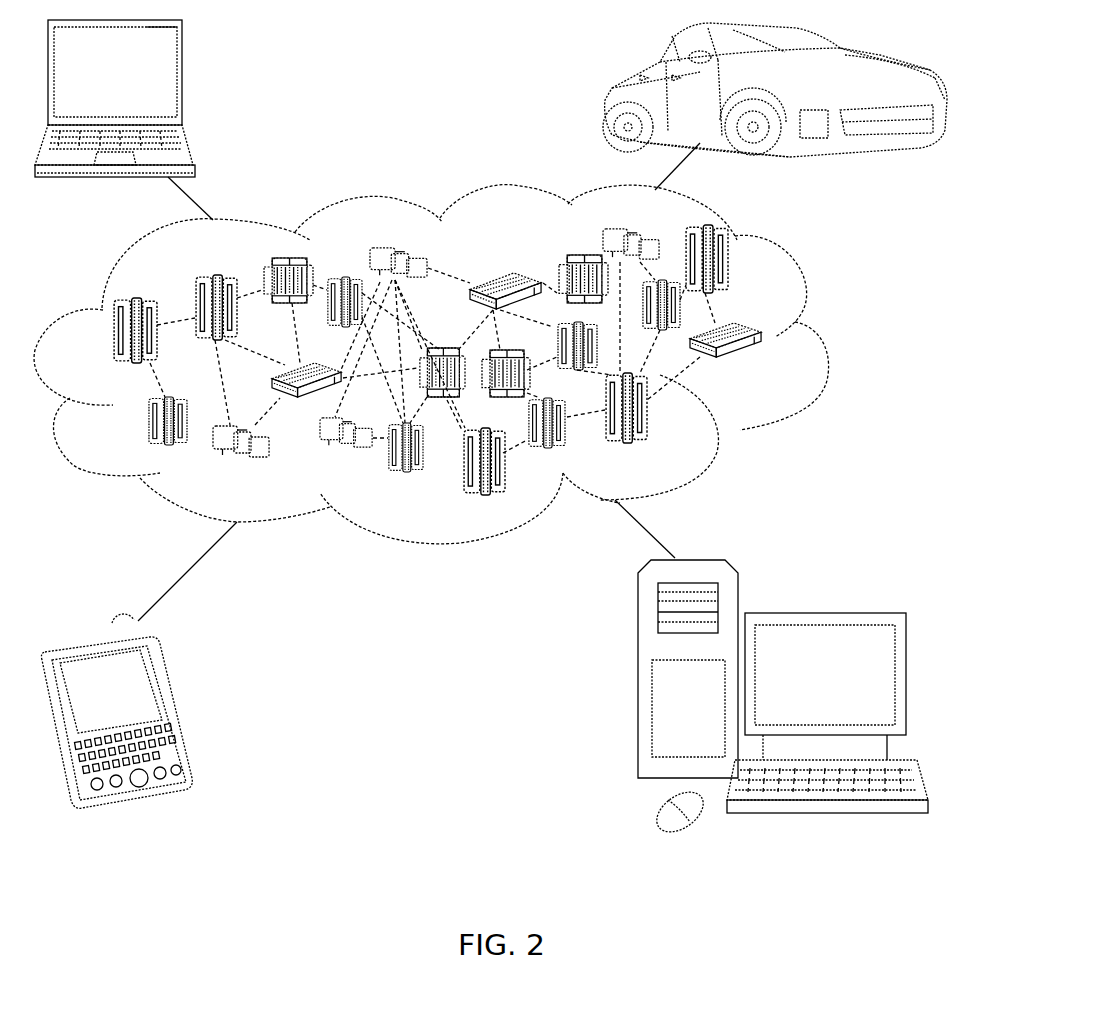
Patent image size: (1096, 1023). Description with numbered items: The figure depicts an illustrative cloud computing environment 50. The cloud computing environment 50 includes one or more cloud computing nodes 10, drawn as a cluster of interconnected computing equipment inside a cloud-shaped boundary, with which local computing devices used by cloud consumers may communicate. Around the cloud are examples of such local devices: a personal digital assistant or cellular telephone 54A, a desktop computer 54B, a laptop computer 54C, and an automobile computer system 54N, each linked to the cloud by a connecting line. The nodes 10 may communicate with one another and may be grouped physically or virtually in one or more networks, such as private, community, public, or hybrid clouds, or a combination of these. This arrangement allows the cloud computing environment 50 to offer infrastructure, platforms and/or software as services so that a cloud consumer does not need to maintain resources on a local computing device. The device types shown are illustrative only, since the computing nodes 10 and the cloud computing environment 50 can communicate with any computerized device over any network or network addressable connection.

The cloud computing node 10 is at (774, 370).
The cloud computing environment 50 is at (455, 403).
The personal digital assistant or cellular telephone 54A is at (172, 705).
The desktop computer 54B is at (822, 615).
The laptop computer 54C is at (185, 81).
The automobile computer system 54N is at (608, 93).